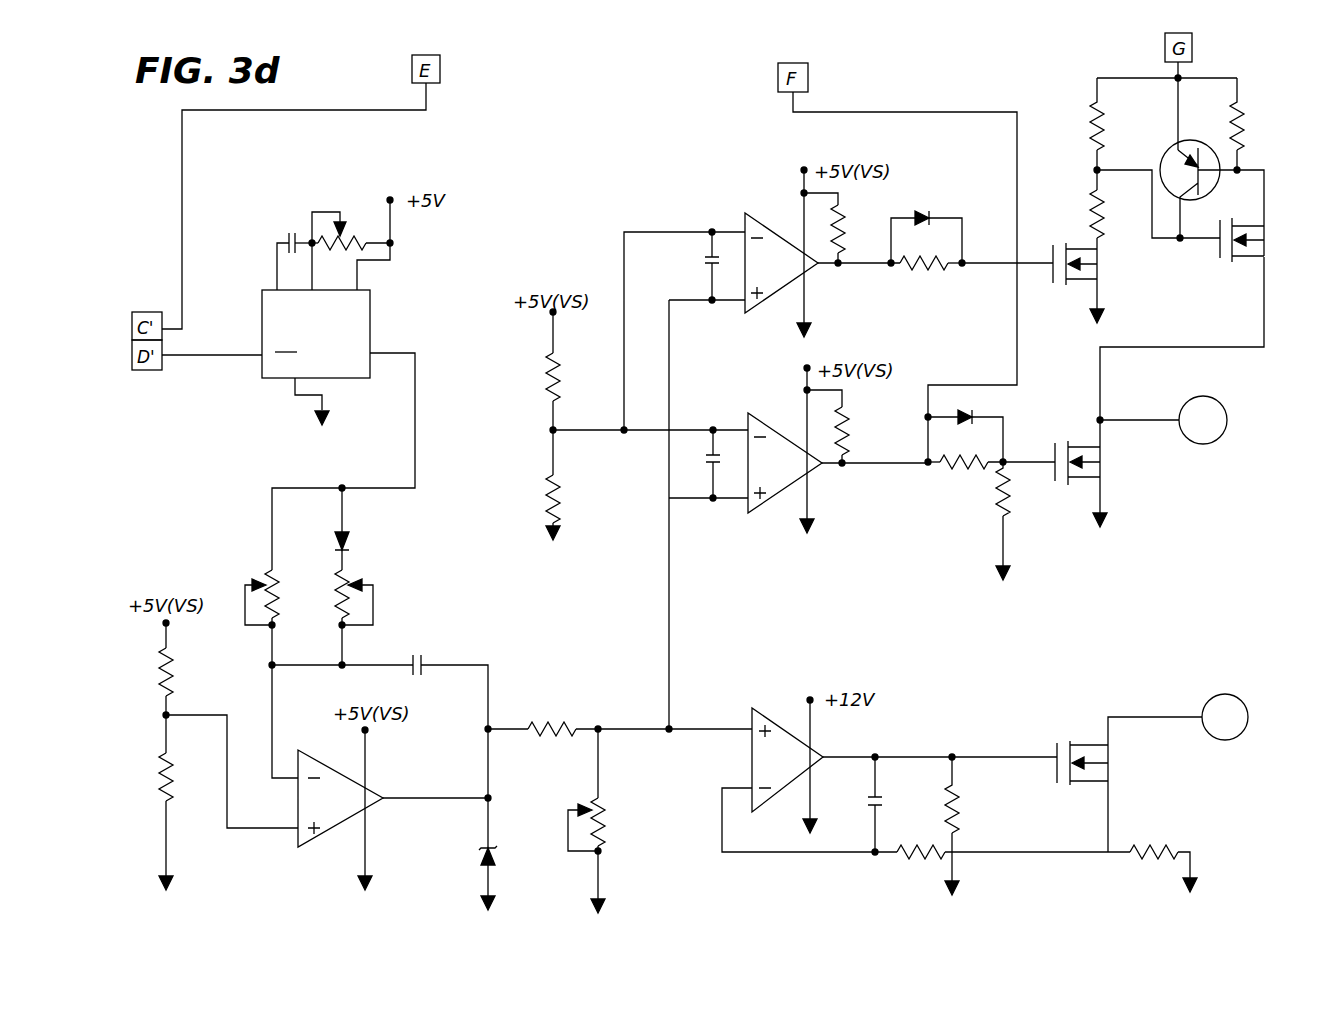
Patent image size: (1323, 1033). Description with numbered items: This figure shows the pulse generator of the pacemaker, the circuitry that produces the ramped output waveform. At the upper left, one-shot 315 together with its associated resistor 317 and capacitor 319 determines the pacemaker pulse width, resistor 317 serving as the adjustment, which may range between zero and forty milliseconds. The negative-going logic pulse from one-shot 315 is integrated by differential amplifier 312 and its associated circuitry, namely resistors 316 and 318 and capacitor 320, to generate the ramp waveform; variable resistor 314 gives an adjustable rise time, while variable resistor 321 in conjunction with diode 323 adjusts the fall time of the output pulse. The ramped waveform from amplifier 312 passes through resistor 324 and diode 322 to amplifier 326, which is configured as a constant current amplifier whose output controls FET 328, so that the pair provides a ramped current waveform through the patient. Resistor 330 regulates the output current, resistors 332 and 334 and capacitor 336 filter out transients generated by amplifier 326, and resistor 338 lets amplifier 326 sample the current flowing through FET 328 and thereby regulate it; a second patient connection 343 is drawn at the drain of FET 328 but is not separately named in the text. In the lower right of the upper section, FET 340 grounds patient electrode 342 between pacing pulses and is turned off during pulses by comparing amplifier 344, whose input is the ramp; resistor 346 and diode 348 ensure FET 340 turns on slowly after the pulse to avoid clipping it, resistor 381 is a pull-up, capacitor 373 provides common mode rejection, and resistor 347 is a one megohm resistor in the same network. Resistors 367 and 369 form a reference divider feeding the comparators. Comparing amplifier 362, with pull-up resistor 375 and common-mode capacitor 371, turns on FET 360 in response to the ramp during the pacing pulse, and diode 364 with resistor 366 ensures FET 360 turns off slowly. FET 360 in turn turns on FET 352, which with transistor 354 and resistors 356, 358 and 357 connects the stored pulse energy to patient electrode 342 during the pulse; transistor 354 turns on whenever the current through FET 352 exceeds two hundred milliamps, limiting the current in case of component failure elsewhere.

The differential amplifier 312 is at (320, 760).
The variable resistor 314 is at (268, 580).
The one-shot 315 is at (372, 332).
The resistor 316 is at (176, 695).
The resistor 317 is at (344, 228).
The resistor 318 is at (182, 797).
The capacitor 319 is at (289, 232).
The capacitor 320 is at (417, 656).
The variable resistor 321 is at (359, 583).
The diode 322 is at (498, 843).
The diode 323 is at (350, 548).
The resistor 324 is at (553, 722).
The amplifier 326 is at (773, 712).
The FET 328 is at (1088, 750).
The resistor 330 is at (614, 826).
The resistor 332 is at (925, 864).
The resistor 334 is at (962, 795).
The capacitor 336 is at (887, 787).
The resistor 338 is at (1158, 836).
The FET 340 is at (1085, 480).
The patient electrode 342 is at (1200, 445).
The motor 343 is at (1205, 702).
The comparing amplifier 344 is at (774, 514).
The resistor 346 is at (966, 480).
The resistor 347 is at (1013, 505).
The diode 348 is at (972, 412).
The FET 352 is at (1243, 263).
The transistor 354 is at (1170, 147).
The resistor 356 is at (1088, 108).
The resistor 357 is at (1113, 228).
The resistor 358 is at (1250, 117).
The FET 360 is at (1051, 282).
The comparing amplifier 362 is at (772, 313).
The diode 364 is at (918, 212).
The resistor 366 is at (911, 266).
The resistor 367 is at (537, 395).
The resistor 369 is at (540, 498).
The capacitor 371 is at (699, 262).
The capacitor 373 is at (706, 492).
The resistor 375 is at (851, 236).
The resistor 381 is at (857, 460).